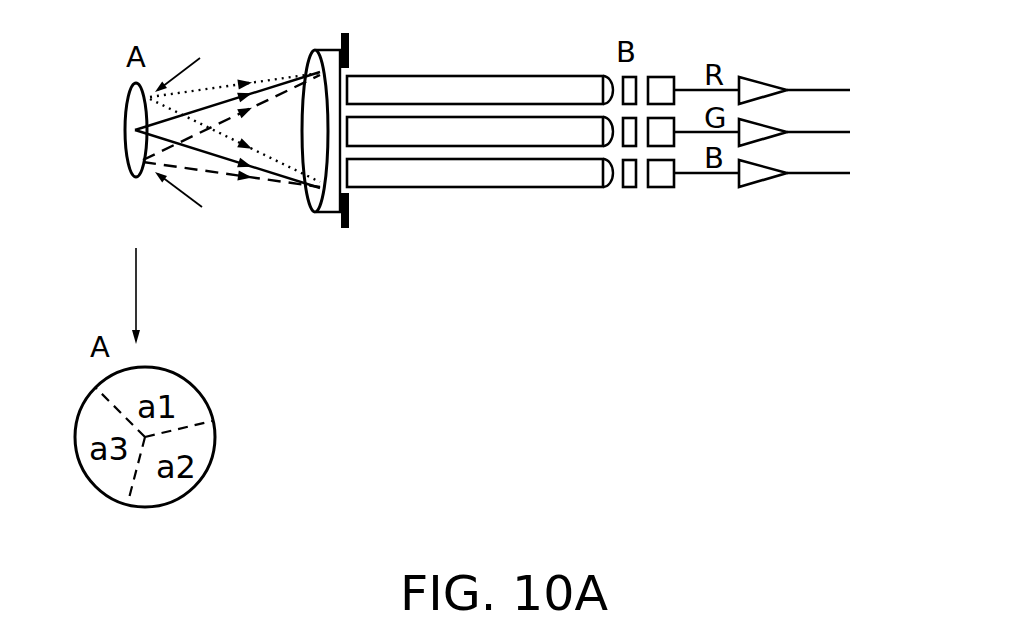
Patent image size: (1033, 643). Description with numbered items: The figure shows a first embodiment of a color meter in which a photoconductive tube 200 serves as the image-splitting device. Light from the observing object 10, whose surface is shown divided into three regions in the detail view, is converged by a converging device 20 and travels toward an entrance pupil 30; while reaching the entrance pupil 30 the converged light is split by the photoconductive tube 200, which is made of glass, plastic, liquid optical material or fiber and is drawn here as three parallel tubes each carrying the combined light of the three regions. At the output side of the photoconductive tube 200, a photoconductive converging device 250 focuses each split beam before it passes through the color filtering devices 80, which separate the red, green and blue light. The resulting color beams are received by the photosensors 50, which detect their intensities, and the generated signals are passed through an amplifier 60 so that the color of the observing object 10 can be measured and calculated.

The observing object 10 is at (127, 173).
The converging device 20 is at (302, 198).
The entrance pupil 30 is at (349, 220).
The photoconductive tube 200 is at (498, 85).
The photoconductive converging device 250 is at (606, 78).
The color filtering devices 80 is at (637, 92).
The photosensors 50 is at (674, 183).
The amplifier 60 is at (763, 170).